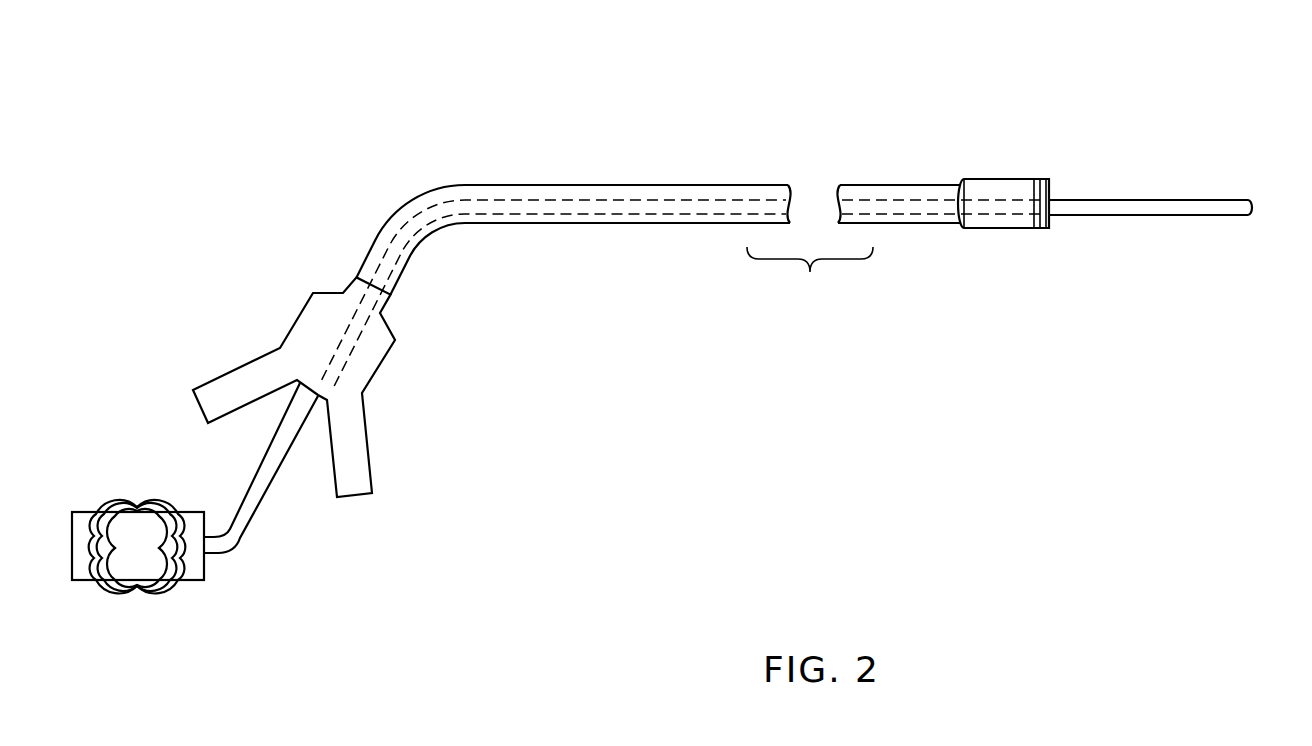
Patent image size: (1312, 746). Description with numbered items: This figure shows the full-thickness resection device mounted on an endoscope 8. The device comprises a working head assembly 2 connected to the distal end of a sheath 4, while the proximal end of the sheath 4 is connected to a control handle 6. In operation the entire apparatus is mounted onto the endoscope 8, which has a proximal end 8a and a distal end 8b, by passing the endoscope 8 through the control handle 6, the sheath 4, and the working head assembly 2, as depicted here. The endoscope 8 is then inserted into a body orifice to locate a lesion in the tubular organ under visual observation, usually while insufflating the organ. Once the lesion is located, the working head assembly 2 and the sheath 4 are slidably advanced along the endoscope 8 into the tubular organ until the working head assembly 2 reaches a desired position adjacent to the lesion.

The working head assembly 2 is at (993, 192).
The sheath 4 is at (605, 223).
The control handle 6 is at (385, 362).
The endoscope 8 is at (1167, 217).
The proximal end of the endoscope 8a is at (242, 490).
The distal end of the endoscope 8b is at (1253, 198).